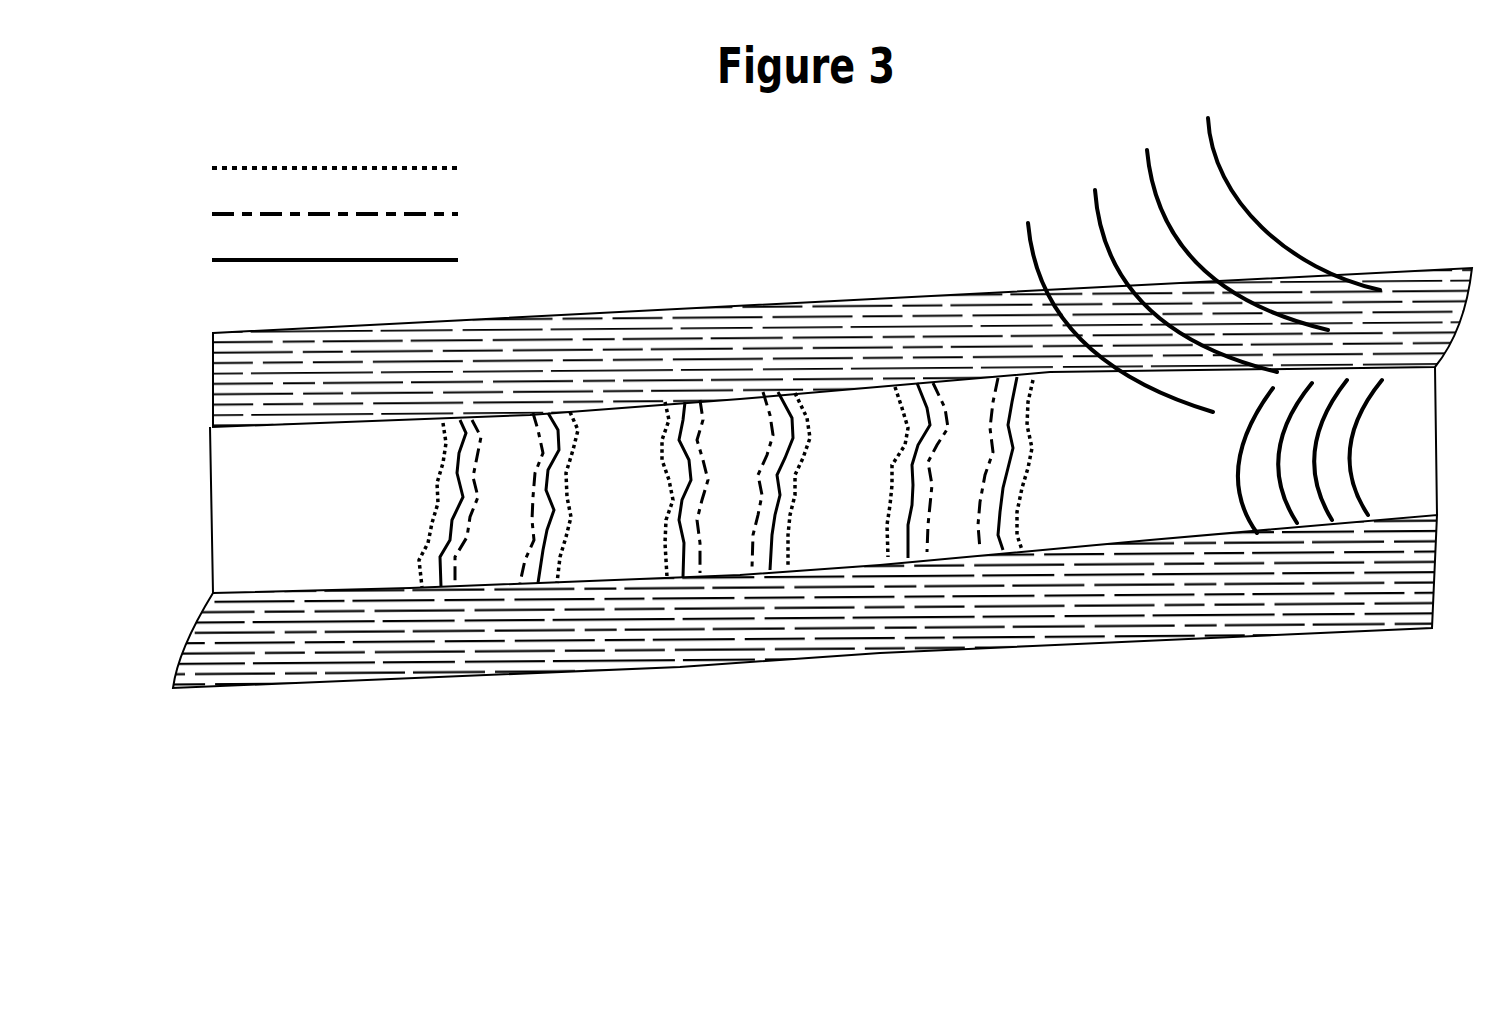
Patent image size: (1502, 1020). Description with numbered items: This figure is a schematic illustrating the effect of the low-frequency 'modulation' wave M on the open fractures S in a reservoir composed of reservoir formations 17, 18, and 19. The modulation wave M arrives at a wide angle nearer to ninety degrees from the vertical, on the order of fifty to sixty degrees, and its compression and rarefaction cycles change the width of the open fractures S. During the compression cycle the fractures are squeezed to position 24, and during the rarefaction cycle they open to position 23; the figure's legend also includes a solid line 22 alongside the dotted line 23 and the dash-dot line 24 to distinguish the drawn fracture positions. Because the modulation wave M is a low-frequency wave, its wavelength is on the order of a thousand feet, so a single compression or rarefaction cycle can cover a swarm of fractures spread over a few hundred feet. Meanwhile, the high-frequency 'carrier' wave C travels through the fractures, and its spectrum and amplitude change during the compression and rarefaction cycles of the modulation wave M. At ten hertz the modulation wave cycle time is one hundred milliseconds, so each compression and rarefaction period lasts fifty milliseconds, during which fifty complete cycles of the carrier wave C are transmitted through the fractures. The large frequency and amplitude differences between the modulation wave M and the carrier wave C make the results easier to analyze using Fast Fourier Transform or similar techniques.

The reservoir formation 17 is at (805, 601).
The reservoir formation 18 is at (823, 480).
The reservoir formation 19 is at (842, 347).
The solid line (flow front) 22 is at (614, 413).
The open fracture position during rarefaction 23 is at (887, 487).
The compressed fracture position 24 is at (980, 491).
The modulation wave M is at (1075, 401).
The carrier wave C is at (1187, 472).
The open fractures S is at (834, 540).